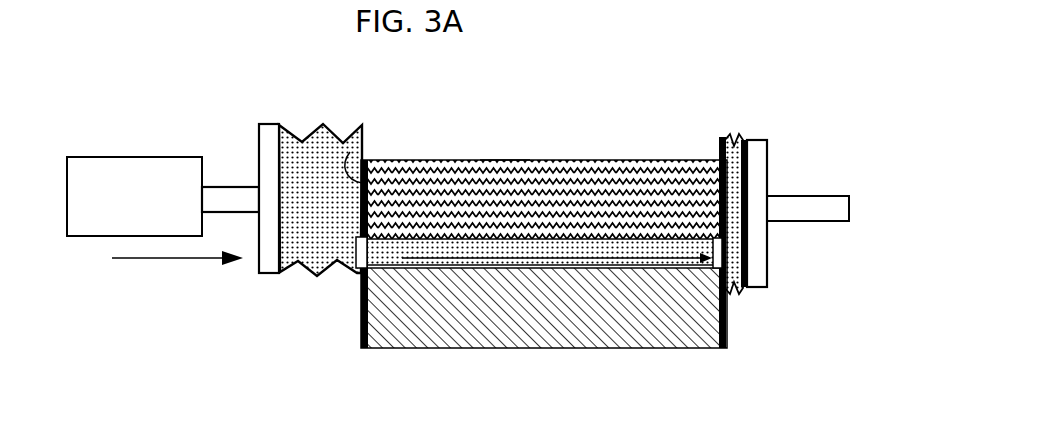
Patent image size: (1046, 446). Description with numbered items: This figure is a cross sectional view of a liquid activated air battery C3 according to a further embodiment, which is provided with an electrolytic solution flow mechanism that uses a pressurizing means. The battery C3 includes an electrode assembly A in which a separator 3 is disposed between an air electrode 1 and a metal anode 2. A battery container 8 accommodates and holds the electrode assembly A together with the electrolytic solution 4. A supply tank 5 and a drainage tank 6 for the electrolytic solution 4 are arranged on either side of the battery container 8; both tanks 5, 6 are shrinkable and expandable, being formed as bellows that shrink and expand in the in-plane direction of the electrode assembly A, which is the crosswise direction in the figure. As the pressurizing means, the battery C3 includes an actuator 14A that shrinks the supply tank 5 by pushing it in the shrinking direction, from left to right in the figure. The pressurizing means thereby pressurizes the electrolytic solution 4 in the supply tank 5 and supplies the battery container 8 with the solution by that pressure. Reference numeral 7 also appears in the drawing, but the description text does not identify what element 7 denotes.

The actuator 14A is at (147, 175).
The liquid activated air battery C3 is at (618, 150).
The air electrode 1 is at (438, 173).
The metal anode 2 is at (420, 338).
The separator 3 is at (605, 262).
The electrolytic solution 4 is at (297, 238).
The supply tank 5 is at (322, 125).
The drainage tank 6 is at (747, 242).
The spacer 7 is at (353, 275).
The battery container 8 is at (350, 152).
The electrode assembly A is at (507, 156).